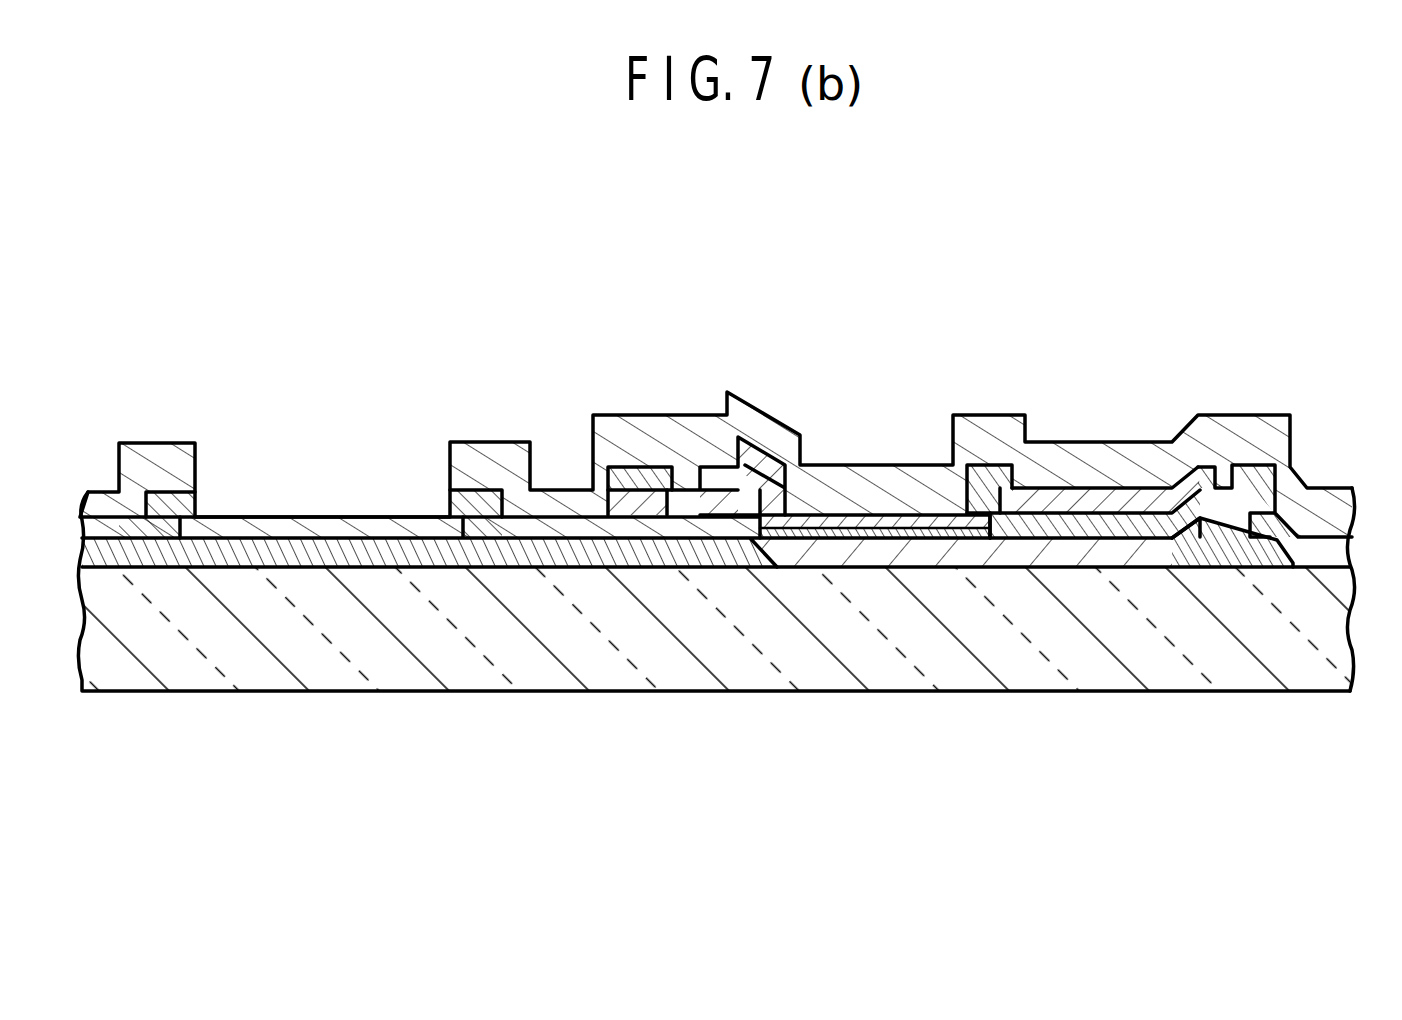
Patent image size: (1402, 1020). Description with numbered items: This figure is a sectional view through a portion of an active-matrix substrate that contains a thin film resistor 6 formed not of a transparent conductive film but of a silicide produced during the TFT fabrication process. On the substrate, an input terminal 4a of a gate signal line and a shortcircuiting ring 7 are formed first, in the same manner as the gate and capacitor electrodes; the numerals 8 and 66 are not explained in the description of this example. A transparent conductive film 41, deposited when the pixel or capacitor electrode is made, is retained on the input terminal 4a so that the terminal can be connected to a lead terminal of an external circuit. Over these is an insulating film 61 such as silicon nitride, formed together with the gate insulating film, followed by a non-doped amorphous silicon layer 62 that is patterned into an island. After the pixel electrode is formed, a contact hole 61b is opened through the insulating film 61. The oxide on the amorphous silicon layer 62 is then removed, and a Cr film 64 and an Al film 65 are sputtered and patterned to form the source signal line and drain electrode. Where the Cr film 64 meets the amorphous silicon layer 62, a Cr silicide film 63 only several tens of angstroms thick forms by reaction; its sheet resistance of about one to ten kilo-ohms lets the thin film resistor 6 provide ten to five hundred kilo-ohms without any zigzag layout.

The shortcircuiting ring 7 is at (1356, 656).
The glass substrate 8 is at (613, 669).
The input terminal of gate signal line 4a is at (366, 556).
The transparent conductive film 41 is at (272, 530).
The insulating film 61 is at (948, 553).
The contact hole 61b is at (1218, 545).
The thin film resistor 6 is at (875, 407).
The non-doped amorphous silicon layer 62 is at (890, 528).
The Cr silicide film 63 is at (842, 520).
The Cr film 64 is at (650, 507).
The Al film 65 is at (638, 475).
The pixel electrode contact 66 is at (495, 462).